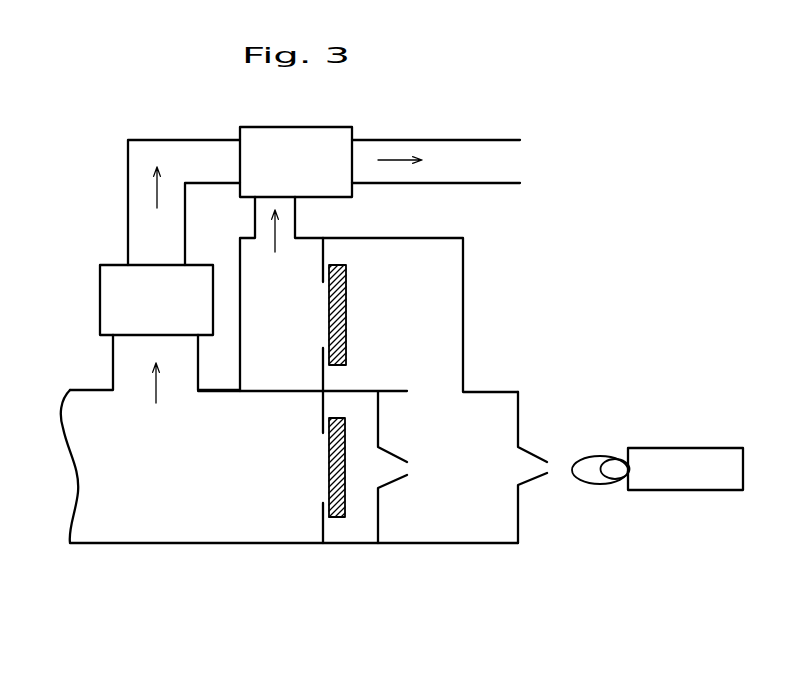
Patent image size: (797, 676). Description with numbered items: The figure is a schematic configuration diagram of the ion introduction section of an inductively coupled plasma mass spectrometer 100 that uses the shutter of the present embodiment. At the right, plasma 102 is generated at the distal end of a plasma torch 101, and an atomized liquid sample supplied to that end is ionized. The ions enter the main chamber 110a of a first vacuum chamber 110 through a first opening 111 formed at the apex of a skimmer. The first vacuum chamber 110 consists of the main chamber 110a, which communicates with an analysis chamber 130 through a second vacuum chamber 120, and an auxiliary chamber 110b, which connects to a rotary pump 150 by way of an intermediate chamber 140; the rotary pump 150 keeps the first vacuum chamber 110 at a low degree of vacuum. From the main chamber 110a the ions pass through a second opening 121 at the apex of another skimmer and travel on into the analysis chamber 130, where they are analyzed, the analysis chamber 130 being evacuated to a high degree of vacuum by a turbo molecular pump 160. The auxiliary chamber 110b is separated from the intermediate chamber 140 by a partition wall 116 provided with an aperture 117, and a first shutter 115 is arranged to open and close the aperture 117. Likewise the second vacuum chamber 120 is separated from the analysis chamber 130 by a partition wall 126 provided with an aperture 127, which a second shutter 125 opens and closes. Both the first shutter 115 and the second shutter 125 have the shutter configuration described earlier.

The mass spectrometer (ICP-MS) 100 is at (647, 151).
The plasma torch 101 is at (700, 448).
The plasma 102 is at (607, 483).
The first vacuum chamber 110 is at (580, 298).
The main chamber 110a is at (466, 422).
The auxiliary chamber 110b is at (446, 360).
The first opening 111 is at (557, 458).
The first shutter 115 is at (346, 316).
The partition wall 116 is at (325, 383).
The aperture 117 is at (309, 327).
The second vacuum chamber 120 is at (352, 541).
The second opening 121 is at (413, 481).
The second shutter 125 is at (329, 460).
The partition wall 126 is at (322, 528).
The aperture 127 is at (310, 467).
The analysis chamber 130 is at (199, 526).
The intermediate chamber 140 is at (302, 266).
The rotary pump 150 is at (310, 127).
The turbo molecular pump 160 is at (100, 292).